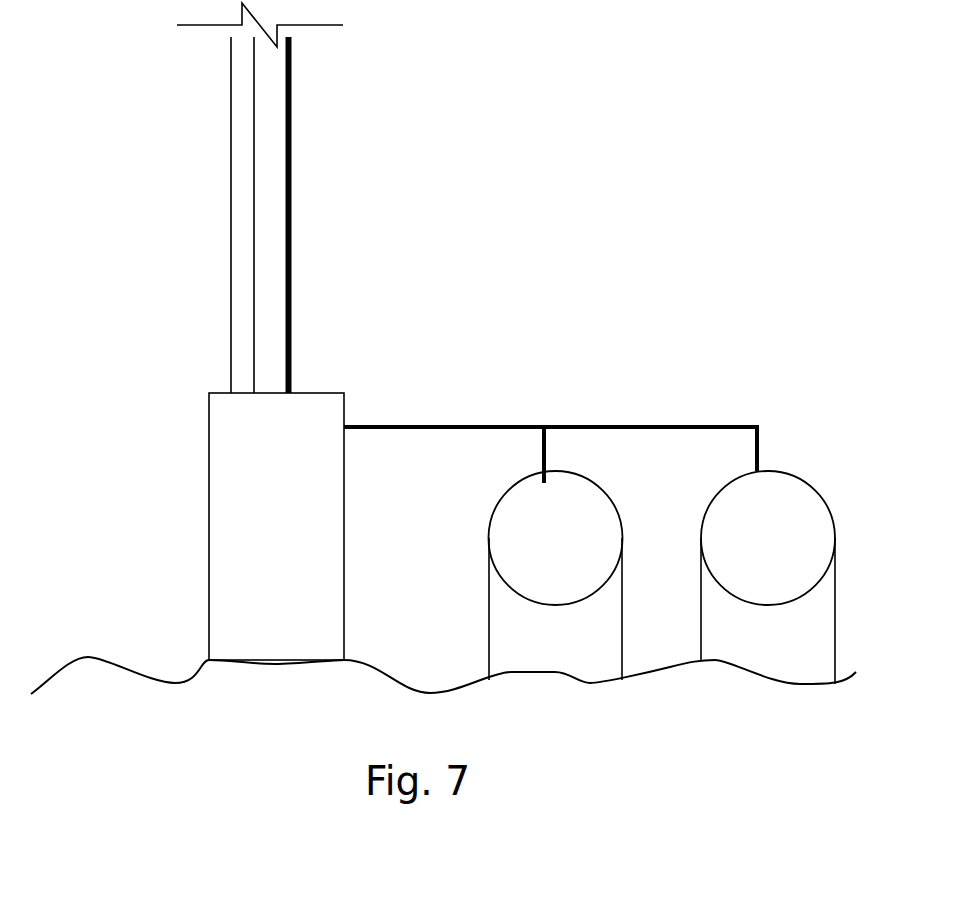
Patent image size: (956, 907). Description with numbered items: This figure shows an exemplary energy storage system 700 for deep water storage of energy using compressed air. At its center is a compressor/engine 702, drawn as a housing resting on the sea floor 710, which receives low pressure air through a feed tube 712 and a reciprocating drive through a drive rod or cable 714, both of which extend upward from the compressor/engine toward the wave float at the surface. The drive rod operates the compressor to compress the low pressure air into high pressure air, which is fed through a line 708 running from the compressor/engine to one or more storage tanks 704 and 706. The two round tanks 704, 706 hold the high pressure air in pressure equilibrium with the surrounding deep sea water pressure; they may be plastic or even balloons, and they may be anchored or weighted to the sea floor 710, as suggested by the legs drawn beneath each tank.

The energy storage system 700 is at (212, 792).
The compressor/engine 702 is at (208, 461).
The storage tank 704 is at (492, 515).
The storage tank 706 is at (712, 505).
The conduit / cable 708 is at (524, 424).
The sea floor 710 is at (153, 680).
The feed tube 712 is at (231, 260).
The drive rod or cable 714 is at (290, 246).